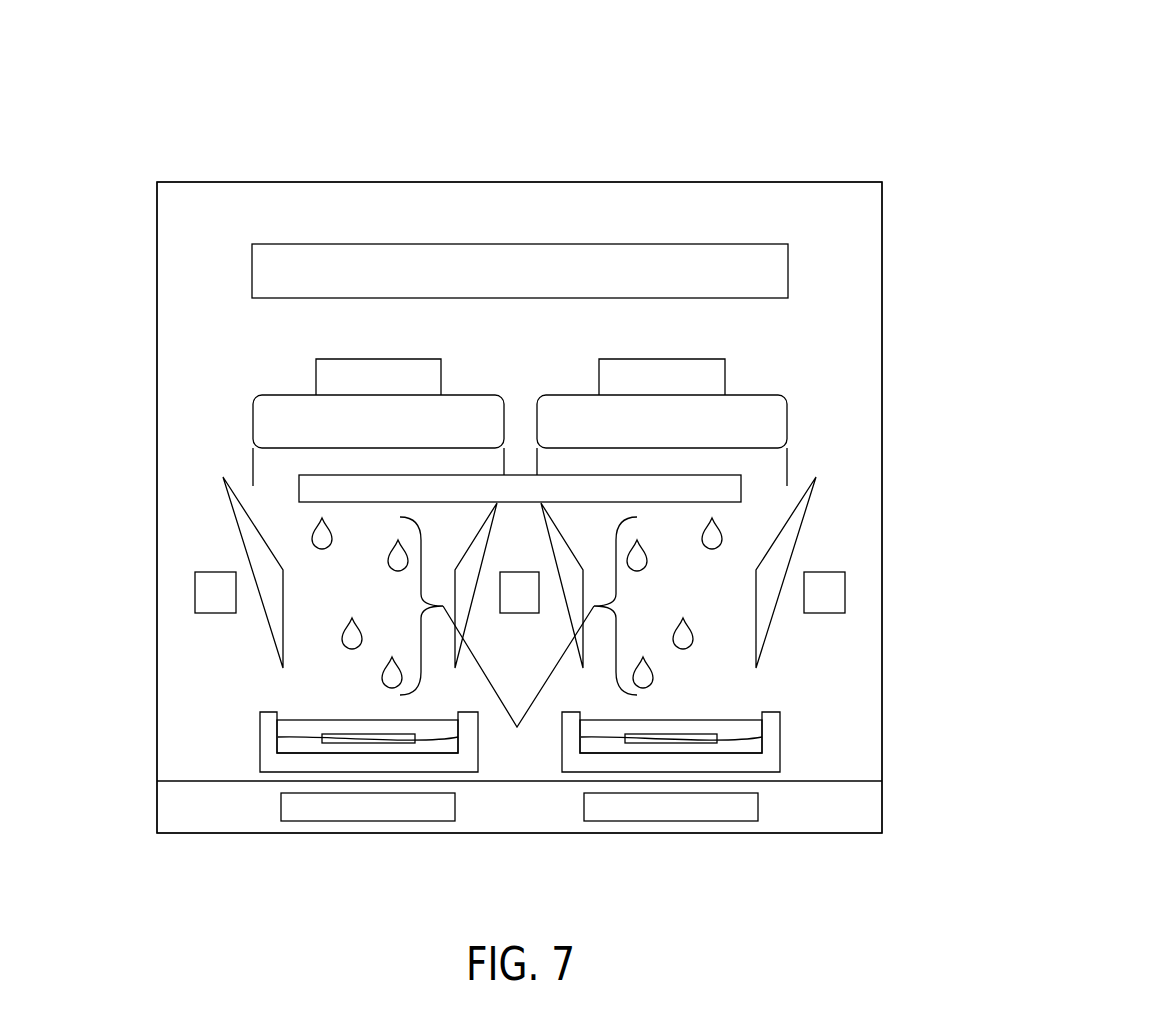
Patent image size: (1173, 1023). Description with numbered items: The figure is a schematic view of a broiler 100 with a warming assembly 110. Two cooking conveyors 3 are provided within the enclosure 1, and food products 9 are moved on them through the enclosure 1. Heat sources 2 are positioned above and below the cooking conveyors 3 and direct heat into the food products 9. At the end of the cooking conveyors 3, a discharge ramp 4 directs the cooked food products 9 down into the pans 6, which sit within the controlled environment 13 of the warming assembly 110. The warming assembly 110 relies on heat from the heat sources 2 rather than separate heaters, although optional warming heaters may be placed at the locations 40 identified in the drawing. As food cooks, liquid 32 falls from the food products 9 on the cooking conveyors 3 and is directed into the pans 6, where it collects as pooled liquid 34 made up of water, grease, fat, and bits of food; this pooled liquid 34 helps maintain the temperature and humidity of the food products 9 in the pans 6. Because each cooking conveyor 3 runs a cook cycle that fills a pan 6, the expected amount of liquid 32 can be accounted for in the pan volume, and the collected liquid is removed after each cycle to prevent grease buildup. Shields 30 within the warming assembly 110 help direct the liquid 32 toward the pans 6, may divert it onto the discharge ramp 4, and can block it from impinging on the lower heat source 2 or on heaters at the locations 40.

The broiler 100 is at (873, 92).
The warming assembly 110 is at (156, 738).
The enclosure 1 is at (883, 367).
The heat sources 2 is at (788, 270).
The cooking conveyors 3 is at (260, 425).
The discharge ramp 4 is at (283, 512).
The food products 9 is at (323, 377).
The shields 30 is at (240, 503).
The locations 40 is at (193, 593).
The controlled environment 13 is at (793, 643).
The liquid 32 is at (518, 642).
The pans 6 is at (260, 747).
The pooled liquid 34 is at (290, 745).